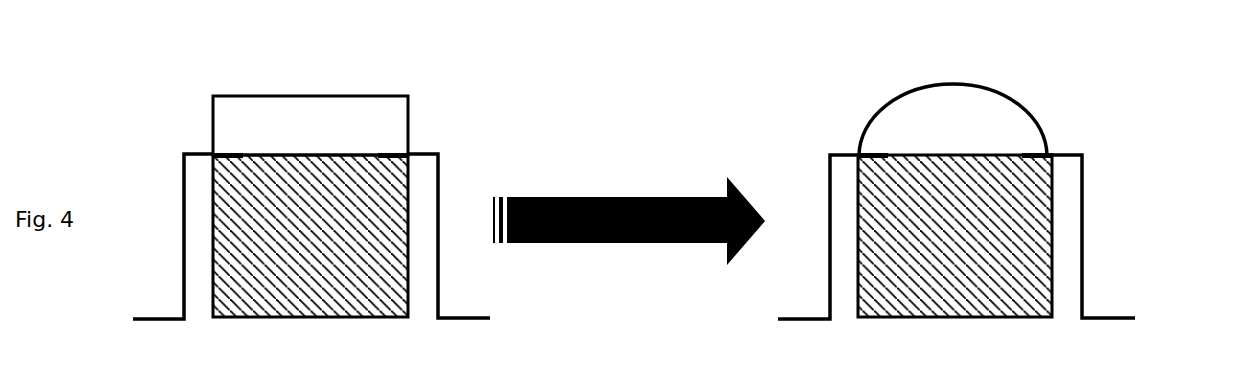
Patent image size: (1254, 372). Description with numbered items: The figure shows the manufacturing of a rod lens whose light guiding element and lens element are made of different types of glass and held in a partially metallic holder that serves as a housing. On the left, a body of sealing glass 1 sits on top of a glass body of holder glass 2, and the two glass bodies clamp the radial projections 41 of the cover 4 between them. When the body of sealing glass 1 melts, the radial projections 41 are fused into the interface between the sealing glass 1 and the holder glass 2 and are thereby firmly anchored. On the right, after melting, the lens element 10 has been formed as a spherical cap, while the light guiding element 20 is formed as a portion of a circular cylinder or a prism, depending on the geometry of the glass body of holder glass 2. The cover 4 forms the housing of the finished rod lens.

The body of sealing glass 1 is at (310, 128).
The glass body of holder glass 2 is at (395, 298).
The cover 4 is at (176, 227).
The radial projections 41 is at (199, 152).
The lens element 10 is at (968, 128).
The light guiding element 20 is at (1052, 190).